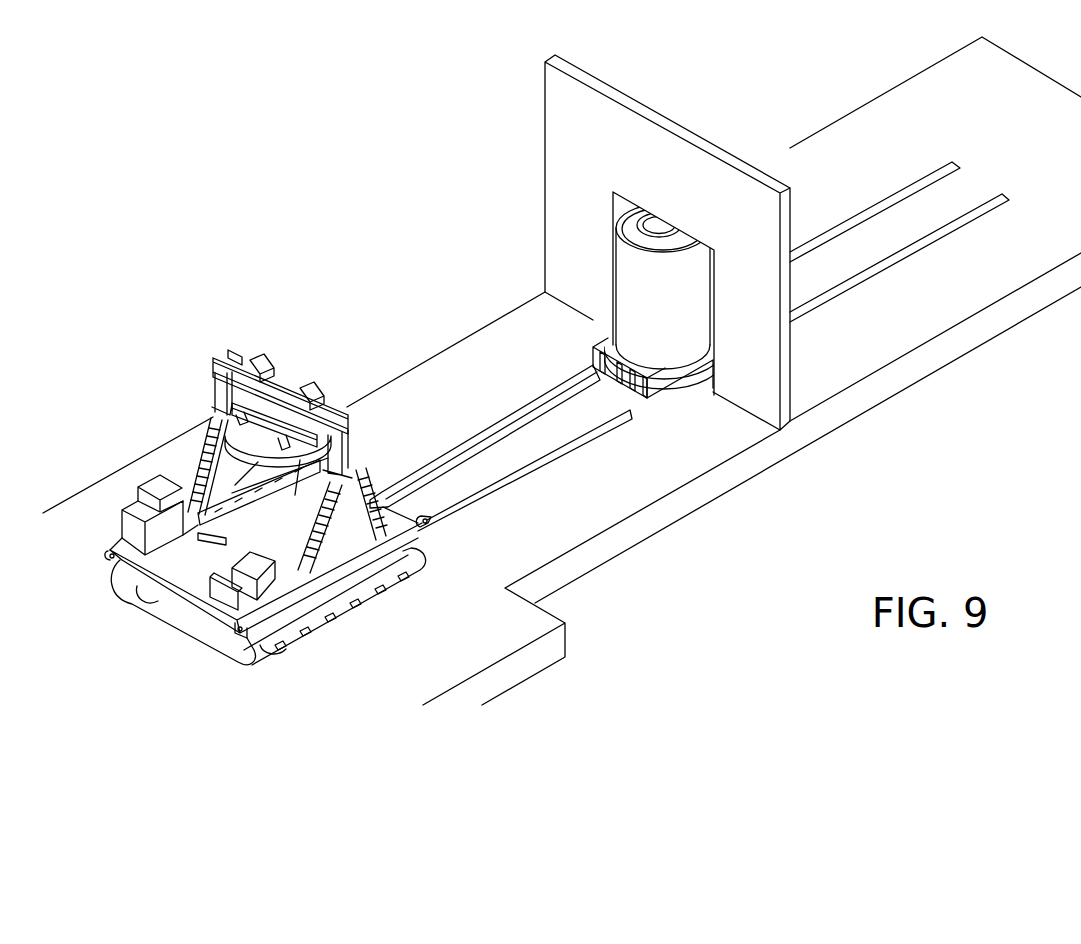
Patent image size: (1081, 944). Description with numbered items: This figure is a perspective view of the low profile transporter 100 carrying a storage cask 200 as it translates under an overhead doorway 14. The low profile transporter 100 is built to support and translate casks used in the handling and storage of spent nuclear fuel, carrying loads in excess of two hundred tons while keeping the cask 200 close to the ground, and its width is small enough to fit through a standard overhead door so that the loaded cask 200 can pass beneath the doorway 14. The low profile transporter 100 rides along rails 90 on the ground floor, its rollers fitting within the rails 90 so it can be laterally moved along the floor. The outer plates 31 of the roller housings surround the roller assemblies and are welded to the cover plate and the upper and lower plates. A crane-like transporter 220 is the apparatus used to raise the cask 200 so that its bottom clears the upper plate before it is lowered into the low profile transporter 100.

The doorway 14 is at (670, 162).
The outer plates 31 is at (667, 407).
The rails 90 is at (913, 243).
The low profile transporter 100 is at (603, 347).
The storage cask 200 is at (620, 217).
The transporter 220 is at (303, 610).